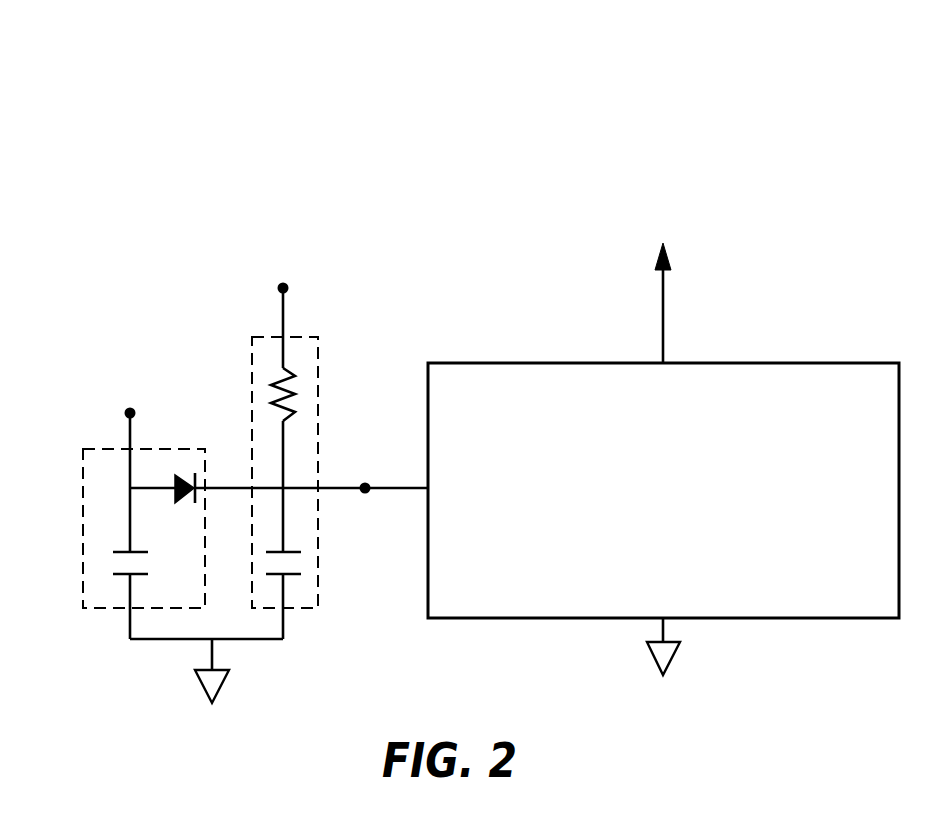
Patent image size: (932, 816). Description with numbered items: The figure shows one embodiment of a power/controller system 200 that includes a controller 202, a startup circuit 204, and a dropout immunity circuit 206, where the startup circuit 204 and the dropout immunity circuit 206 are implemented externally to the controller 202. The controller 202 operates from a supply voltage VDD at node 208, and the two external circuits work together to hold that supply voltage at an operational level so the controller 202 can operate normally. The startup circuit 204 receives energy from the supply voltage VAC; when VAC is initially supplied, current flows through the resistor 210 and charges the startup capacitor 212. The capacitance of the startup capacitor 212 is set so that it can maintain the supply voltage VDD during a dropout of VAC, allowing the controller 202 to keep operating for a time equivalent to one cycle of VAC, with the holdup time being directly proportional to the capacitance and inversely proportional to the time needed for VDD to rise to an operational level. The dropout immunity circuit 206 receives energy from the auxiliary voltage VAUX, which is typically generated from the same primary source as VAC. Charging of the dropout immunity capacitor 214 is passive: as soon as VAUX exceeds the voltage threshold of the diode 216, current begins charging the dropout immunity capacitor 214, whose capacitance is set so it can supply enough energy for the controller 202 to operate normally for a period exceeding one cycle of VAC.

The power/controller system 200 is at (862, 176).
The controller 202 is at (770, 363).
The startup circuit 204 is at (318, 373).
The dropout immunity circuit 206 is at (103, 448).
The node 208 is at (367, 495).
The resistor 210 is at (276, 370).
The startup capacitor 212 is at (296, 576).
The dropout immunity capacitor 214 is at (120, 574).
The diode 216 is at (176, 479).